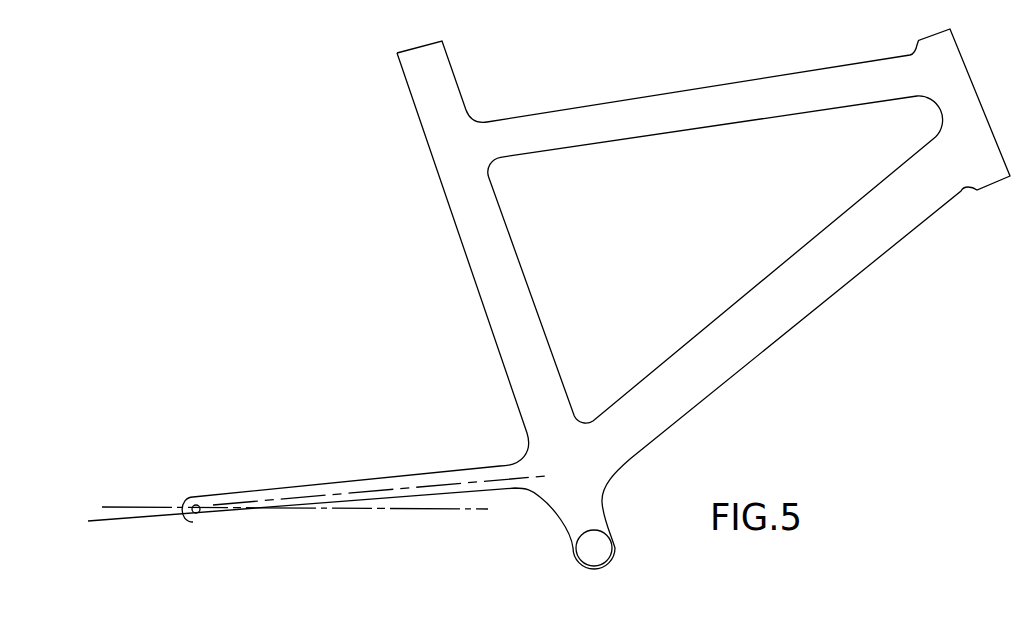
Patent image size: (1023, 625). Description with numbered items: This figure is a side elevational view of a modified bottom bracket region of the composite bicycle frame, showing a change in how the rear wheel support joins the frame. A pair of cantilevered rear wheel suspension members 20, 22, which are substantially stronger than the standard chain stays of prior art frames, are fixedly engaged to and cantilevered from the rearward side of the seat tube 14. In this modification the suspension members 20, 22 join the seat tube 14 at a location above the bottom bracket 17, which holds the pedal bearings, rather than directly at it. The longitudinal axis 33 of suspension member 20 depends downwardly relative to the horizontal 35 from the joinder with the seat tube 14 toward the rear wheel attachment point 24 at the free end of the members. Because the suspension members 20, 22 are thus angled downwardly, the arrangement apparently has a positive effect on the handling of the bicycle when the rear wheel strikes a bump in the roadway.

The seat tube 14 is at (508, 243).
The bottom bracket 17 is at (598, 515).
The rear wheel suspension member 20 is at (363, 485).
The rear wheel suspension member 22 is at (330, 487).
The rear wheel attachment point 24 is at (198, 512).
The longitudinal axis 33 is at (274, 500).
The horizontal 35 is at (437, 510).